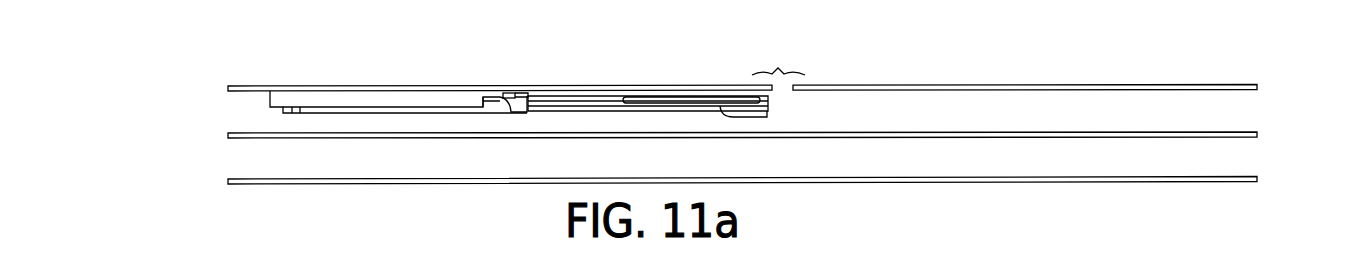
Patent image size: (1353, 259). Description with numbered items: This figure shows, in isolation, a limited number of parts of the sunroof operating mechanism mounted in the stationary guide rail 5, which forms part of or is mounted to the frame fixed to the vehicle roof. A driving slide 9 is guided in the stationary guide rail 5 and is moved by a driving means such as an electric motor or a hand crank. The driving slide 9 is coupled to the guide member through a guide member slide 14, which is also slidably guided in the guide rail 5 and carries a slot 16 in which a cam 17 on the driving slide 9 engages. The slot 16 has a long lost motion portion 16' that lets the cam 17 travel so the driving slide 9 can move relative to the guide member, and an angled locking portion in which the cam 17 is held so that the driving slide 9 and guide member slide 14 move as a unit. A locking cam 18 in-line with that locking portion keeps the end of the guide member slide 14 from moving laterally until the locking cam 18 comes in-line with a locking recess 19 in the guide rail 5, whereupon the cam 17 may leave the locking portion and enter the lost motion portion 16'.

The stationary guide rail 5 is at (333, 185).
The driving slide 9 is at (385, 86).
The guide member slide 14 is at (612, 110).
The slot 16 is at (444, 135).
The lost motion portion 16' is at (730, 63).
The cam 17 is at (517, 100).
The locking cam 18 is at (502, 97).
The locking recess 19 is at (778, 67).